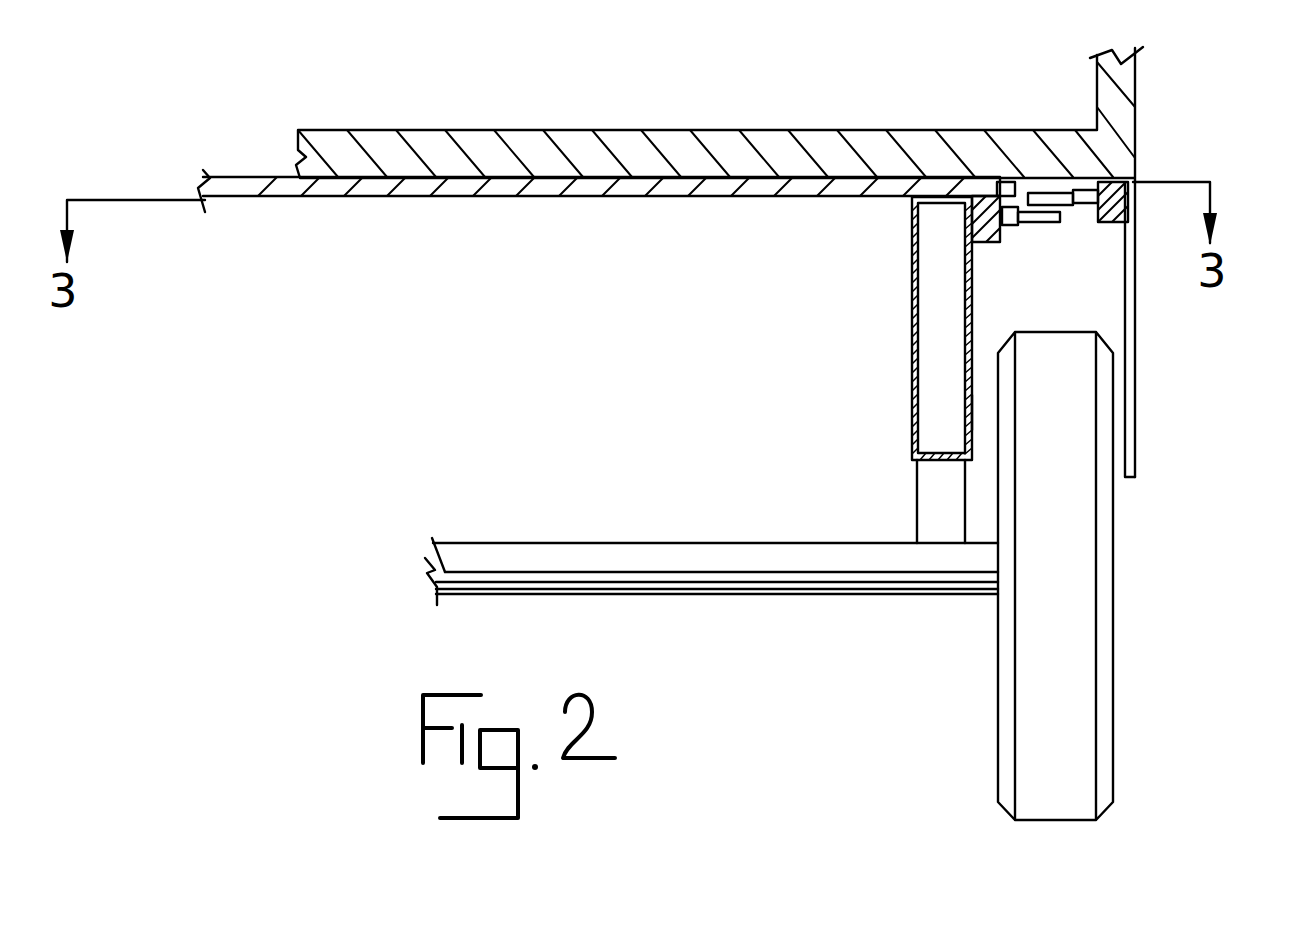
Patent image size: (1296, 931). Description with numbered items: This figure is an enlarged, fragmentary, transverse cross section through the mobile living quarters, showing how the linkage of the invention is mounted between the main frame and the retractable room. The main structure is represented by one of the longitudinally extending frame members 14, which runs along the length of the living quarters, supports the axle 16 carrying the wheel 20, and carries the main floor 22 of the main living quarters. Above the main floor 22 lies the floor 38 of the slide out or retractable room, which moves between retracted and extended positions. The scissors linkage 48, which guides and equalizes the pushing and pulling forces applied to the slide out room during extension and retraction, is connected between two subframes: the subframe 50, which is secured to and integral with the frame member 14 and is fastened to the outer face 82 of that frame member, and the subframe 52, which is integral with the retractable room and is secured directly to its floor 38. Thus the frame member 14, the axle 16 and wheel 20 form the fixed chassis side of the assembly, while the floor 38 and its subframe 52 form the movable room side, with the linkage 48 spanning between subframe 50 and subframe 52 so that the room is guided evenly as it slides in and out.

The frame member 14 is at (915, 373).
The axle 16 is at (752, 580).
The wheel 20 is at (1060, 812).
The main floor 22 is at (505, 180).
The floor 38 is at (686, 148).
The linkage 48 is at (1058, 234).
The subframe 50 is at (995, 228).
The subframe 52 is at (1128, 232).
The outer face 82 is at (975, 410).